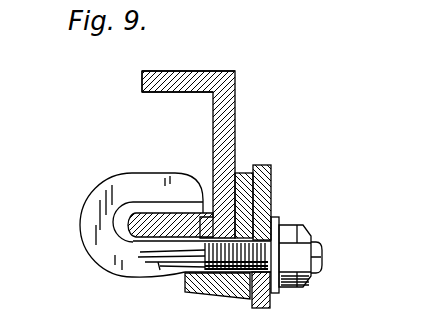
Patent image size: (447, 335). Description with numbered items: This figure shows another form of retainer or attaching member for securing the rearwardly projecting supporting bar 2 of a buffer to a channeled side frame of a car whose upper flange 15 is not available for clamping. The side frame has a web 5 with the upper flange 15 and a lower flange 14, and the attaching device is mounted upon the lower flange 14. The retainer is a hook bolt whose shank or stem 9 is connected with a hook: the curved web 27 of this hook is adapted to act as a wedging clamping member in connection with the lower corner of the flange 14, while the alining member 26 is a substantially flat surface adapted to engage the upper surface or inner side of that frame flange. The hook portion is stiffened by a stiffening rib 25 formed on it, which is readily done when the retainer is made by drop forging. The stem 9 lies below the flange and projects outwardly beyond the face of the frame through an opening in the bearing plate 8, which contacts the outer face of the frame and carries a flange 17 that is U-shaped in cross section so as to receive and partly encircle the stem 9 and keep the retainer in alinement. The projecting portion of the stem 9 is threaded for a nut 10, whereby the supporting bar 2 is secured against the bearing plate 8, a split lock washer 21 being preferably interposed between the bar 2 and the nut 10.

The supporting bar 2 is at (263, 208).
The web 5 is at (233, 120).
The bearing plate 8 is at (244, 190).
The stem 9 is at (255, 252).
The nut 10 is at (300, 267).
The lower flange 14 is at (145, 232).
The upper flange 15 is at (142, 78).
The flange 17 is at (222, 291).
The split lock washer 21 is at (280, 222).
The stiffening rib 25 is at (98, 222).
The alining member 26 is at (158, 202).
The curved web 27 is at (128, 232).